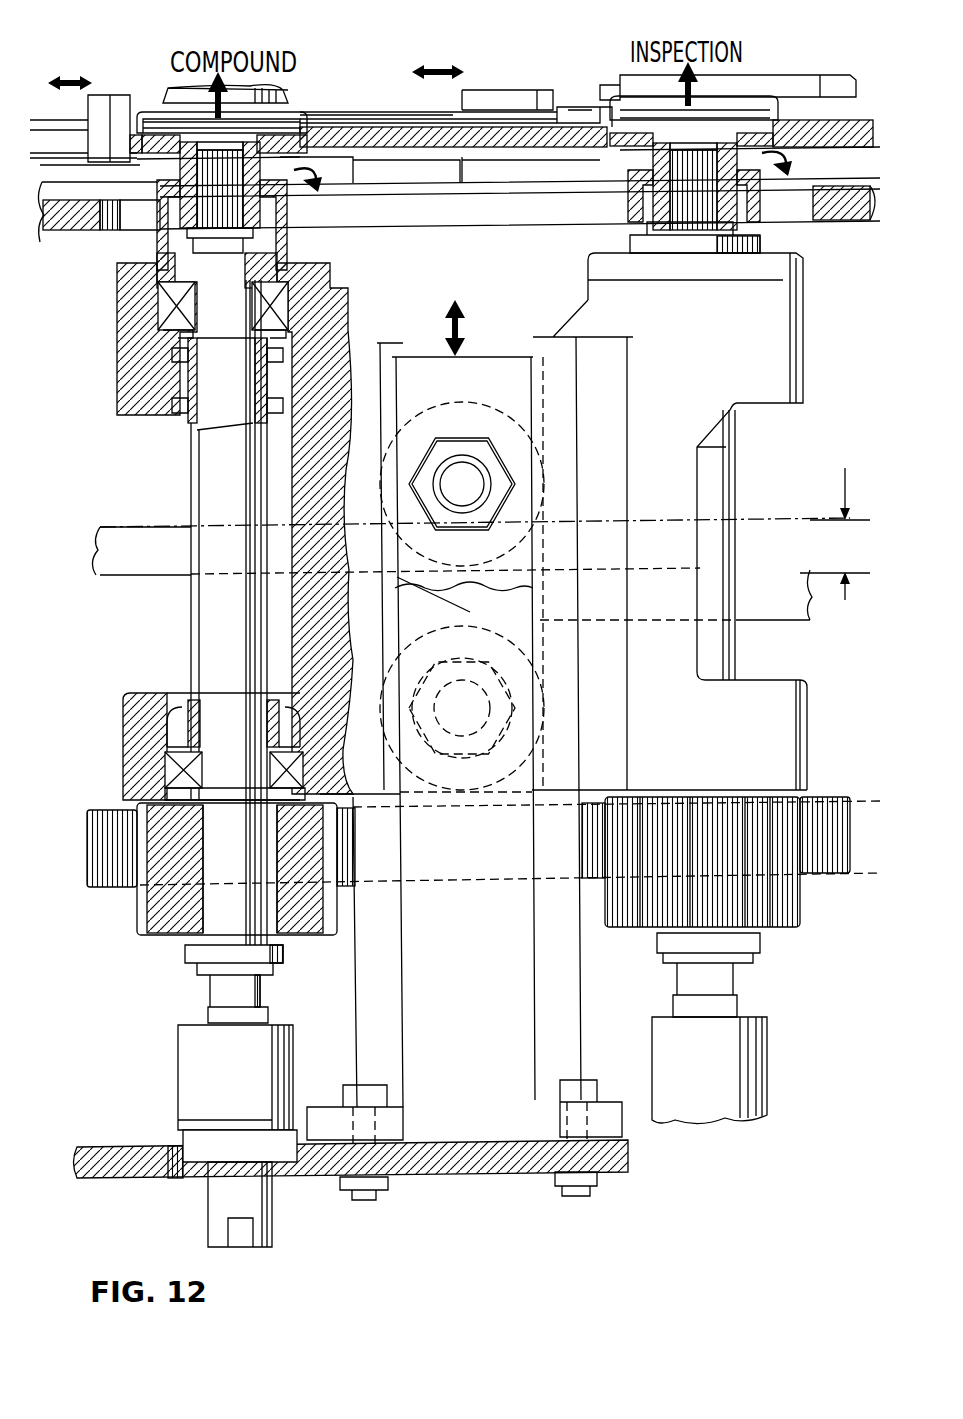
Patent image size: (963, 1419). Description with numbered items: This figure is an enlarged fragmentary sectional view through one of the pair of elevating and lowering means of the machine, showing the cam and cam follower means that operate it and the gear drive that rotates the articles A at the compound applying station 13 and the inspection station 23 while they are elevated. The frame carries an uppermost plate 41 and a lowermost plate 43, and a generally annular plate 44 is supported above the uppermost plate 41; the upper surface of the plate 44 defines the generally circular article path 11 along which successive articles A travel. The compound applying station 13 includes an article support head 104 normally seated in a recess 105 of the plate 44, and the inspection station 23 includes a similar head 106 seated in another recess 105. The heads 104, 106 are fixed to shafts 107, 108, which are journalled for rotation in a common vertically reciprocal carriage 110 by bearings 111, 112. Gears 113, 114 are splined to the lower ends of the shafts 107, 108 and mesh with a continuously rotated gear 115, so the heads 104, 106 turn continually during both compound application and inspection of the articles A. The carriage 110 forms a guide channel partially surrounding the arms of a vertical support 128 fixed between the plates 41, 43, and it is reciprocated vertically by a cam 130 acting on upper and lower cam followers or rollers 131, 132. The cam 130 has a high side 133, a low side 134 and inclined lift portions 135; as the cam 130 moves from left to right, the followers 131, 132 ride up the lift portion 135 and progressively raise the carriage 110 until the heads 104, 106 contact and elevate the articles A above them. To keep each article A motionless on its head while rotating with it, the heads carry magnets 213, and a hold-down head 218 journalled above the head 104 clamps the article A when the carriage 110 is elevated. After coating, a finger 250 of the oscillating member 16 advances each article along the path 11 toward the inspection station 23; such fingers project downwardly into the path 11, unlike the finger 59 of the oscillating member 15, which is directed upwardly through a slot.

The article path 11 is at (396, 120).
The compound applying station 13 is at (342, 84).
The oscillating member 15 is at (40, 242).
The oscillating member 16 is at (548, 88).
The inspection station 23 is at (780, 86).
The uppermost plate 41 is at (840, 218).
The lowermost plate 43 is at (128, 1180).
The annular plate 44 is at (468, 148).
The finger 59 is at (106, 100).
The article support head 104 is at (340, 148).
The recess 105 is at (140, 160).
The head 106 is at (620, 147).
The shaft 107 is at (210, 398).
The shaft 108 is at (740, 474).
The carriage 110 is at (714, 326).
The bearing 111 is at (283, 305).
The bearing 112 is at (165, 762).
The gear 113 is at (165, 935).
The gear 114 is at (790, 906).
The gear 115 is at (840, 802).
The vertical support 128 is at (560, 1004).
The cam 130 is at (140, 520).
The upper cam follower 131 is at (458, 420).
The lower cam follower 132 is at (454, 788).
The high side 133 is at (96, 552).
The low side 134 is at (770, 612).
The lift portion 135 is at (446, 536).
The magnet 213 is at (160, 180).
The hold-down head 218 is at (278, 98).
The finger 250 is at (558, 138).
The article A is at (308, 114).